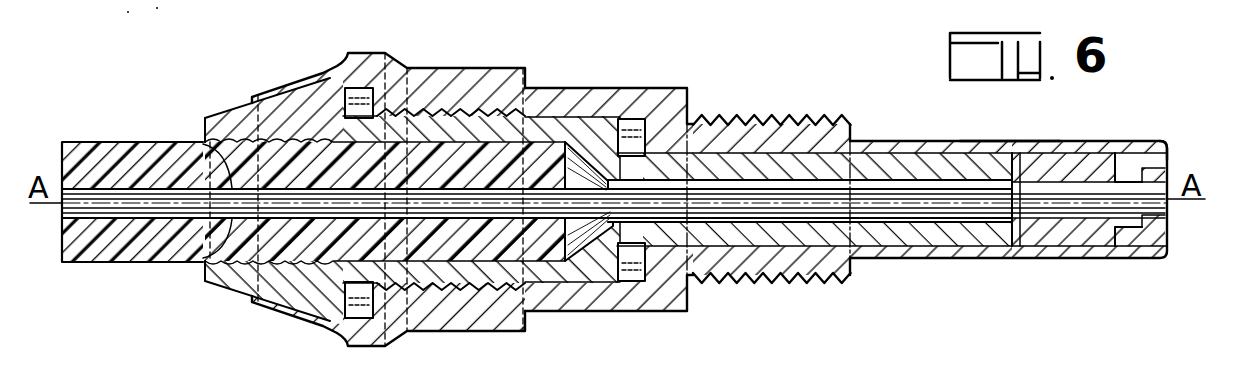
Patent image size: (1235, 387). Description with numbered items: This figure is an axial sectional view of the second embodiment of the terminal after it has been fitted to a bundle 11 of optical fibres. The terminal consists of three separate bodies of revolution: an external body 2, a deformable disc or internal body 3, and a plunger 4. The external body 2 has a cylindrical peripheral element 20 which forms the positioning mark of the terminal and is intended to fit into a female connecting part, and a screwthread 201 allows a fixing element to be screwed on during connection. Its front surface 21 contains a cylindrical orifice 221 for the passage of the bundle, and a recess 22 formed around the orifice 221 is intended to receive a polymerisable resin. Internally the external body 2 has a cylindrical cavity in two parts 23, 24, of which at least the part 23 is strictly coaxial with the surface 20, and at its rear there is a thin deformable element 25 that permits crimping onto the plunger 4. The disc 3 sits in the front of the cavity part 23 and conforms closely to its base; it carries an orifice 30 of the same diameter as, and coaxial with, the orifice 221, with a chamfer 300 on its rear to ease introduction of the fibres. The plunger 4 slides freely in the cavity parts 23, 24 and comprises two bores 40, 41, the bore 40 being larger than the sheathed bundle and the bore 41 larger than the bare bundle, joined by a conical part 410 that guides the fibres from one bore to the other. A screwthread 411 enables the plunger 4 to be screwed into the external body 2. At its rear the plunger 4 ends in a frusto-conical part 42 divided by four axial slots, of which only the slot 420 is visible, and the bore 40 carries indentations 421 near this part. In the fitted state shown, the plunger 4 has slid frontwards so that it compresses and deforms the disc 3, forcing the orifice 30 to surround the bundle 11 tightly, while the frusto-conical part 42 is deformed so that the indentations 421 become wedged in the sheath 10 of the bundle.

The sheath 10 is at (103, 247).
The bundle 11 is at (940, 214).
The external body 2 is at (690, 300).
The cylindrical peripheral element 20 is at (1000, 141).
The screwthread 201 is at (778, 118).
The front surface 21 is at (1168, 148).
The recess 22 is at (1158, 260).
The cylindrical orifice 221 is at (1124, 165).
The cavity part 23 is at (905, 145).
The cavity part 24 is at (598, 118).
The deformable element 25 is at (320, 86).
The internal body 3 is at (1063, 235).
The orifice 30 is at (1082, 216).
The chamfer 300 is at (1024, 230).
The plunger 4 is at (877, 240).
The bore 40 is at (540, 285).
The bore 41 is at (1003, 233).
The conical part 410 is at (605, 278).
The screwthread 411 is at (478, 110).
The frusto-conical part 42 is at (247, 122).
The slot 420 is at (190, 264).
The indentations 421 is at (207, 119).